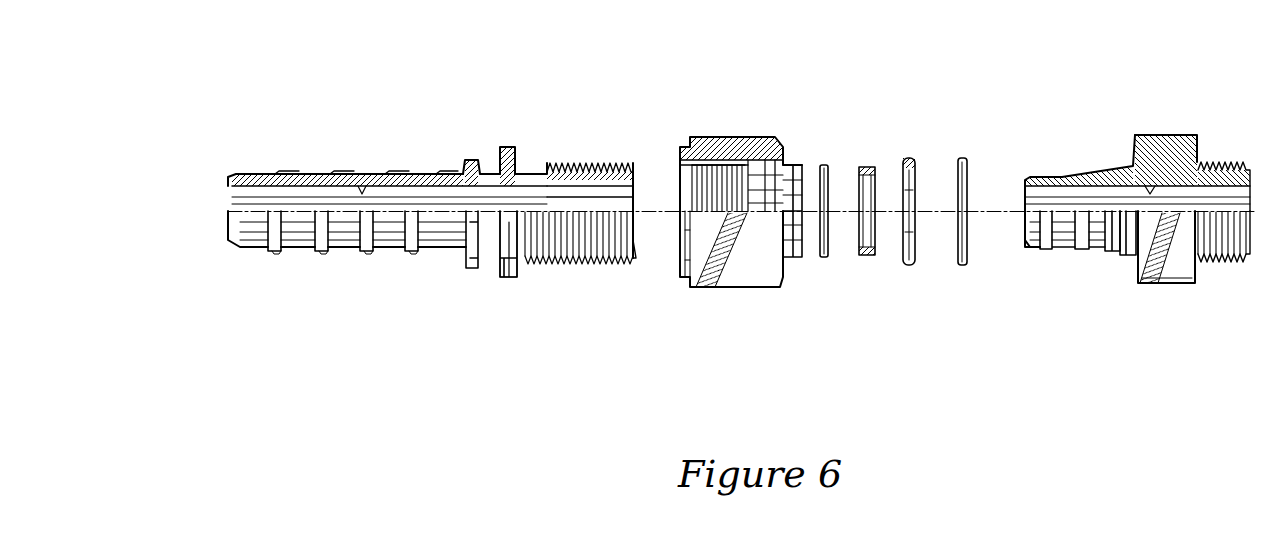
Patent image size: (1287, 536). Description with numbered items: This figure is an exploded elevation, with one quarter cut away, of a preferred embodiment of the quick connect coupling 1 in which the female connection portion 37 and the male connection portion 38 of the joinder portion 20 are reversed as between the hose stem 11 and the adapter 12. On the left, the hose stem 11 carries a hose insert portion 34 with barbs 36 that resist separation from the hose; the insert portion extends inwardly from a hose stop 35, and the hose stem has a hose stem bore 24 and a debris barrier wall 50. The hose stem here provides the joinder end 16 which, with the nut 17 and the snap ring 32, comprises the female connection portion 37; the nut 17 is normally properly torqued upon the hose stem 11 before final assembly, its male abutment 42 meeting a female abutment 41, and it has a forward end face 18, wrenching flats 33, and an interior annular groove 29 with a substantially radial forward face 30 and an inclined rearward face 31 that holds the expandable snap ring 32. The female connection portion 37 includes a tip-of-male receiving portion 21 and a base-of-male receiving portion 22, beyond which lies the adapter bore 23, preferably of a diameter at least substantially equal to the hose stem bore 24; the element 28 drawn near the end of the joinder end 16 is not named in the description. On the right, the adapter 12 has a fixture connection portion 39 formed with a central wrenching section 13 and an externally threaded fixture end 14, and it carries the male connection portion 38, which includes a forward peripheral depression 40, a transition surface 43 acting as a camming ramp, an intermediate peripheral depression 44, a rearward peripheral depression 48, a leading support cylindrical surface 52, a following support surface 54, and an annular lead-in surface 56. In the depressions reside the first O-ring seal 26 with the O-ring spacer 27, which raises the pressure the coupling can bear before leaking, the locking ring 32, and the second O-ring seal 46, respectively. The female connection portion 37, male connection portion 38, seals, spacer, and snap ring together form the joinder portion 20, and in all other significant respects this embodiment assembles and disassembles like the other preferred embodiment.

The quick connect coupling 1 is at (1090, 89).
The hose stem 11 is at (682, 210).
The adapter 12 is at (1128, 207).
The central wrenching section 13 is at (1172, 285).
The fixture end 14 is at (1228, 165).
The joinder end 16 is at (545, 260).
The nut 17 is at (722, 206).
The forward end face 18 is at (683, 150).
The joinder portion 20 is at (824, 261).
The tip-of-male receiving portion 21 is at (572, 165).
The base-of-male receiving portion 22 is at (797, 165).
The adapter bore 23 is at (1150, 186).
The hose stem bore 24 is at (364, 184).
The first O-ring seal 26 is at (825, 165).
The O-ring spacer 27 is at (867, 167).
The end face 28 is at (628, 163).
The interior annular groove 29 is at (770, 160).
The radial forward face 30 is at (735, 150).
The inclined rearward face 31 is at (778, 160).
The snap ring 32 is at (910, 158).
The wrenching flats 33 is at (722, 266).
The hose insert portion 34 is at (682, 238).
The hose stop 35 is at (470, 160).
The barbs 36 is at (322, 173).
The female connection portion 37 is at (674, 229).
The male connection portion 38 is at (1123, 254).
The fixture connection portion 39 is at (1198, 225).
The forward peripheral depression 40 is at (1040, 177).
The female abutment 41 is at (636, 262).
The male abutment 42 is at (745, 170).
The transition surface 43 is at (1086, 252).
The intermediate peripheral depression 44 is at (1100, 174).
The second O-ring seal 46 is at (962, 158).
The rearward peripheral depression 48 is at (525, 146).
The debris barrier wall 50 is at (490, 269).
The leading support cylindrical surface 52 is at (1055, 250).
The following support cylindrical surface 54 is at (1110, 267).
The annular lead-in surface 56 is at (1028, 248).